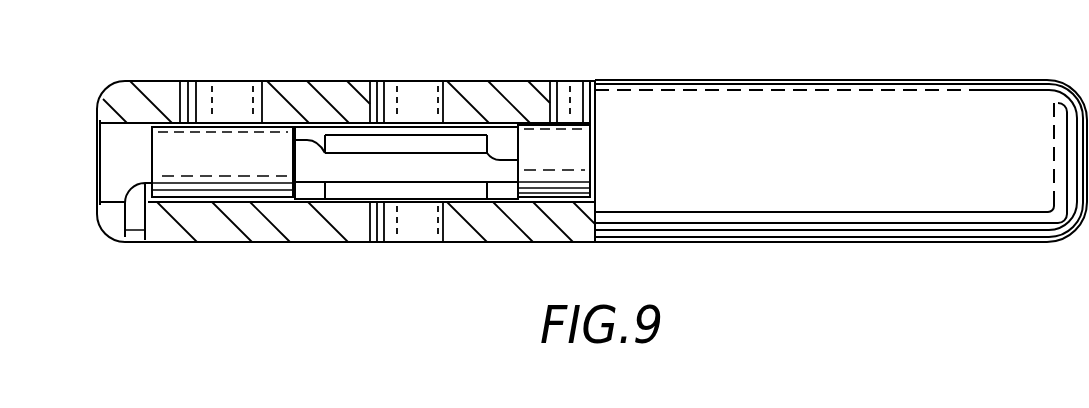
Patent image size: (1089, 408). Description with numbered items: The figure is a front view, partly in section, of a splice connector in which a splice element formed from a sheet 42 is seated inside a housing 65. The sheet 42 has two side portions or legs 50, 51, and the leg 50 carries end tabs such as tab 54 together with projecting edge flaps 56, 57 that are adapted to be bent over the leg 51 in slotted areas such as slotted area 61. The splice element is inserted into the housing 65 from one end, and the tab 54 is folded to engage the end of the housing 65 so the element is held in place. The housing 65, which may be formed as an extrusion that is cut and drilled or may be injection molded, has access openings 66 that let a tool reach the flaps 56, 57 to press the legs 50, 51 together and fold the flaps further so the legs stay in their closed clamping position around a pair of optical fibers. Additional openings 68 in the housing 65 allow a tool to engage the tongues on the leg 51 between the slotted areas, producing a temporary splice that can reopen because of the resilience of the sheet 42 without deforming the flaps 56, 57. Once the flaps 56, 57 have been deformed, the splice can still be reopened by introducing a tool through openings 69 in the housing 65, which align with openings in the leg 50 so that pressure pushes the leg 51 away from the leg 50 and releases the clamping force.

The sheet 42 is at (134, 160).
The leg 50 is at (352, 190).
The leg 51 is at (405, 140).
The end tab 54 is at (135, 227).
The edge flap 56 is at (222, 178).
The edge flap 57 is at (578, 150).
The slotted area 61 is at (500, 148).
The housing 65 is at (750, 92).
The access opening 66 is at (195, 86).
The additional opening 68 is at (440, 92).
The opening 69 is at (436, 232).